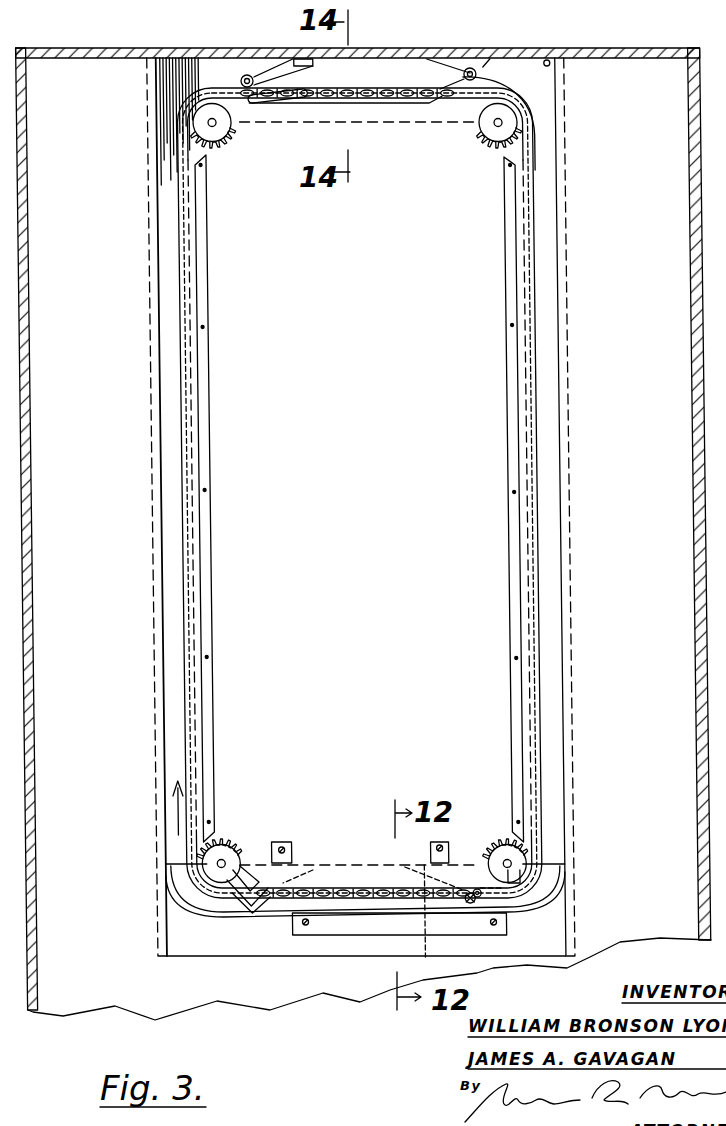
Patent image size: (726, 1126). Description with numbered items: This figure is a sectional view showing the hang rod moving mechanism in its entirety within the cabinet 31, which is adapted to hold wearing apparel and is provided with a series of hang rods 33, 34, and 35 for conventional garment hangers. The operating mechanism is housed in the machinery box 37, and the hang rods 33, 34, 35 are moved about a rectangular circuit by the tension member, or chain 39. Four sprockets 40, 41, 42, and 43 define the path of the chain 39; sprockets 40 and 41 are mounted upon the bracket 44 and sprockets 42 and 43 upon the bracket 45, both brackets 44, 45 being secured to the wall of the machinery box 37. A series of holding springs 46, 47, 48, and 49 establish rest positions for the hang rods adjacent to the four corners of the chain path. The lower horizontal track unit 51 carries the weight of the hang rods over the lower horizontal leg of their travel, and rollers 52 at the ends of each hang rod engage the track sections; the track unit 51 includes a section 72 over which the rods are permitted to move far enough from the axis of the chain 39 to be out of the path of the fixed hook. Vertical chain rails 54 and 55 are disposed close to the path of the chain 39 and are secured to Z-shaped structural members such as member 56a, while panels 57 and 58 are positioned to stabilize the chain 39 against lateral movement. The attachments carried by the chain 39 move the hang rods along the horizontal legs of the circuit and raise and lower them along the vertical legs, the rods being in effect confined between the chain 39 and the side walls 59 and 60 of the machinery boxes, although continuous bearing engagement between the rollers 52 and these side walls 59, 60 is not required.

The cabinet 31 is at (641, 503).
The hang rod 33 is at (473, 68).
The hang rod 34 is at (246, 75).
The hang rod 35 is at (470, 899).
The machinery box 37 is at (371, 599).
The chain 39 is at (180, 244).
The sprocket 40 is at (222, 140).
The sprocket 41 is at (478, 130).
The sprocket 42 is at (504, 822).
The sprocket 43 is at (240, 842).
The bracket 44 is at (395, 115).
The bracket 45 is at (313, 868).
The holding spring 46 is at (277, 72).
The holding spring 47 is at (446, 60).
The holding spring 48 is at (429, 925).
The holding spring 49 is at (231, 900).
The lower horizontal track unit 51 is at (360, 914).
The roller 52 is at (241, 82).
The vertical chain rail 54 is at (190, 424).
The vertical chain rail 55 is at (528, 381).
The Z-shaped structural member 56a is at (508, 432).
The panel 57 is at (478, 897).
The panel 58 is at (208, 570).
The side wall 59 is at (160, 372).
The side wall 60 is at (557, 282).
The track section 72 is at (186, 908).